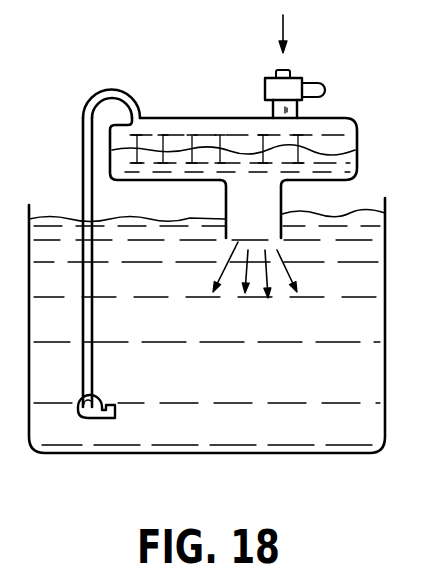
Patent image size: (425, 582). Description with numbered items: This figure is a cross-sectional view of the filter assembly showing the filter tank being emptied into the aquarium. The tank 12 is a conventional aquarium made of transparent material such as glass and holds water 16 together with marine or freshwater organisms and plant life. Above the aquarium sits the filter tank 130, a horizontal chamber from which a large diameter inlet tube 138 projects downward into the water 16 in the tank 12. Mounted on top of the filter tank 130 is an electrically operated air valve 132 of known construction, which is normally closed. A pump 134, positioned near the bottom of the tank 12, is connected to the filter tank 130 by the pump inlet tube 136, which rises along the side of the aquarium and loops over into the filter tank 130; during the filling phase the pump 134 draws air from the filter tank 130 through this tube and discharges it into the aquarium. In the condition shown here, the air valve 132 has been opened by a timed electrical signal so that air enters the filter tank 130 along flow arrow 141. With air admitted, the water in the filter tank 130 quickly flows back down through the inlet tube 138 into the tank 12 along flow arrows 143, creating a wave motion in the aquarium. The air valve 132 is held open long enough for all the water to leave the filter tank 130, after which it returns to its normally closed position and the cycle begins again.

The tank 12 is at (262, 455).
The water 16 is at (225, 334).
The filter tank 130 is at (362, 135).
The air valve 132 is at (312, 68).
The pump 134 is at (108, 404).
The pump inlet tube 136 is at (121, 88).
The inlet tube 138 is at (284, 198).
The flow arrow 141 is at (283, 31).
The flow arrows 143 is at (227, 262).